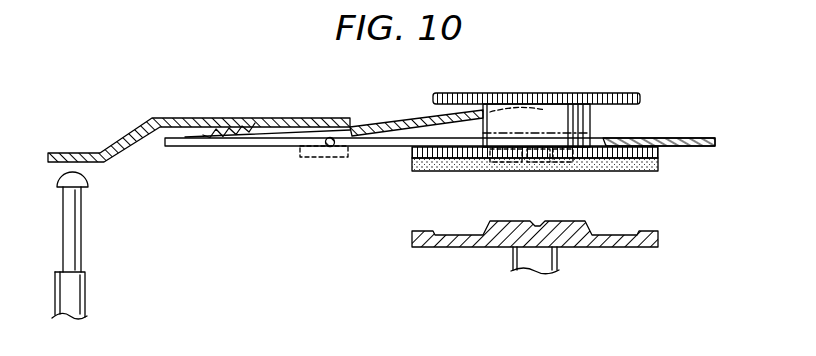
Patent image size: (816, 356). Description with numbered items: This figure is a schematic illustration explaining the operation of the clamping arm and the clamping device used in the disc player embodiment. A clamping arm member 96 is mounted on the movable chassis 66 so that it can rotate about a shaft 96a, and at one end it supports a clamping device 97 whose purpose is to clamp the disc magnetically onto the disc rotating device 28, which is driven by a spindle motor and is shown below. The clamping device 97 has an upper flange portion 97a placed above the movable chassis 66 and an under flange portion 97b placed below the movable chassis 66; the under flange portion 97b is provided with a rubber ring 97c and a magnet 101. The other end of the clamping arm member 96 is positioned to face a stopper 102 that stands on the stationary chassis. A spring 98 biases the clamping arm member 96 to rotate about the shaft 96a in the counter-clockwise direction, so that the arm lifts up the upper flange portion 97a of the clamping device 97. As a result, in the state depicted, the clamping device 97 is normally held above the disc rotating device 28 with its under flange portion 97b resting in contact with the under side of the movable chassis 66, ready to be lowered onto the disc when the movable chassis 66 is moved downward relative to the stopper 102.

The clamping arm member 96 is at (300, 126).
The shaft 96a is at (317, 156).
The spring 98 is at (246, 137).
The movable chassis 66 is at (690, 137).
The clamping device 97 is at (636, 122).
The upper flange portion 97a is at (612, 93).
The under flange portion 97b is at (658, 154).
The rubber ring 97c is at (432, 172).
The magnet 101 is at (505, 172).
The disc rotating device 28 is at (626, 248).
The stopper 102 is at (80, 247).